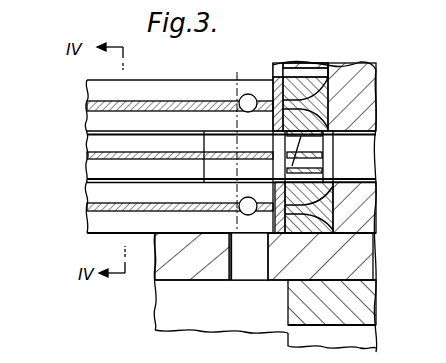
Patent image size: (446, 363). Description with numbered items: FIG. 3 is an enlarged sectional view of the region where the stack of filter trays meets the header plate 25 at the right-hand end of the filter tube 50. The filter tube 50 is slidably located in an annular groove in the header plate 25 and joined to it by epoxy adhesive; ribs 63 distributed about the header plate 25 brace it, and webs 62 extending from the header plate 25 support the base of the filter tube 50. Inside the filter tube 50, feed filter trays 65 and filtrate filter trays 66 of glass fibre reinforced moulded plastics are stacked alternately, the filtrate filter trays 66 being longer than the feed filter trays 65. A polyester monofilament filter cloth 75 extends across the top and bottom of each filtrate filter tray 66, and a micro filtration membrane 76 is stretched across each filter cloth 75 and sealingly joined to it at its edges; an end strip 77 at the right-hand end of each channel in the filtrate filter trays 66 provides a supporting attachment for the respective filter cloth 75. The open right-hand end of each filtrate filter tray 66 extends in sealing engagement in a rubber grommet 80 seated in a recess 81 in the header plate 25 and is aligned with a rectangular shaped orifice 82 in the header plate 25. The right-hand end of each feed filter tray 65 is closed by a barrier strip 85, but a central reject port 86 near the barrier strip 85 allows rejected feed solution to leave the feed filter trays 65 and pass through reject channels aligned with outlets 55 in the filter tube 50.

The header plate 25 is at (345, 75).
The filter tube 50 is at (197, 268).
The outlets 55 is at (250, 272).
The webs 62 is at (158, 300).
The ribs 63 is at (293, 337).
The feed filter trays 65 is at (213, 90).
The filtrate filter trays 66 is at (165, 168).
The filter cloth 75 is at (88, 158).
The micro filtration membrane 76 is at (88, 110).
The end strip 77 is at (279, 166).
The rubber grommet 80 is at (300, 80).
The recess 81 is at (320, 226).
The rectangular shaped orifice 82 is at (370, 166).
The barrier strip 85 is at (277, 92).
The central reject port 86 is at (230, 262).